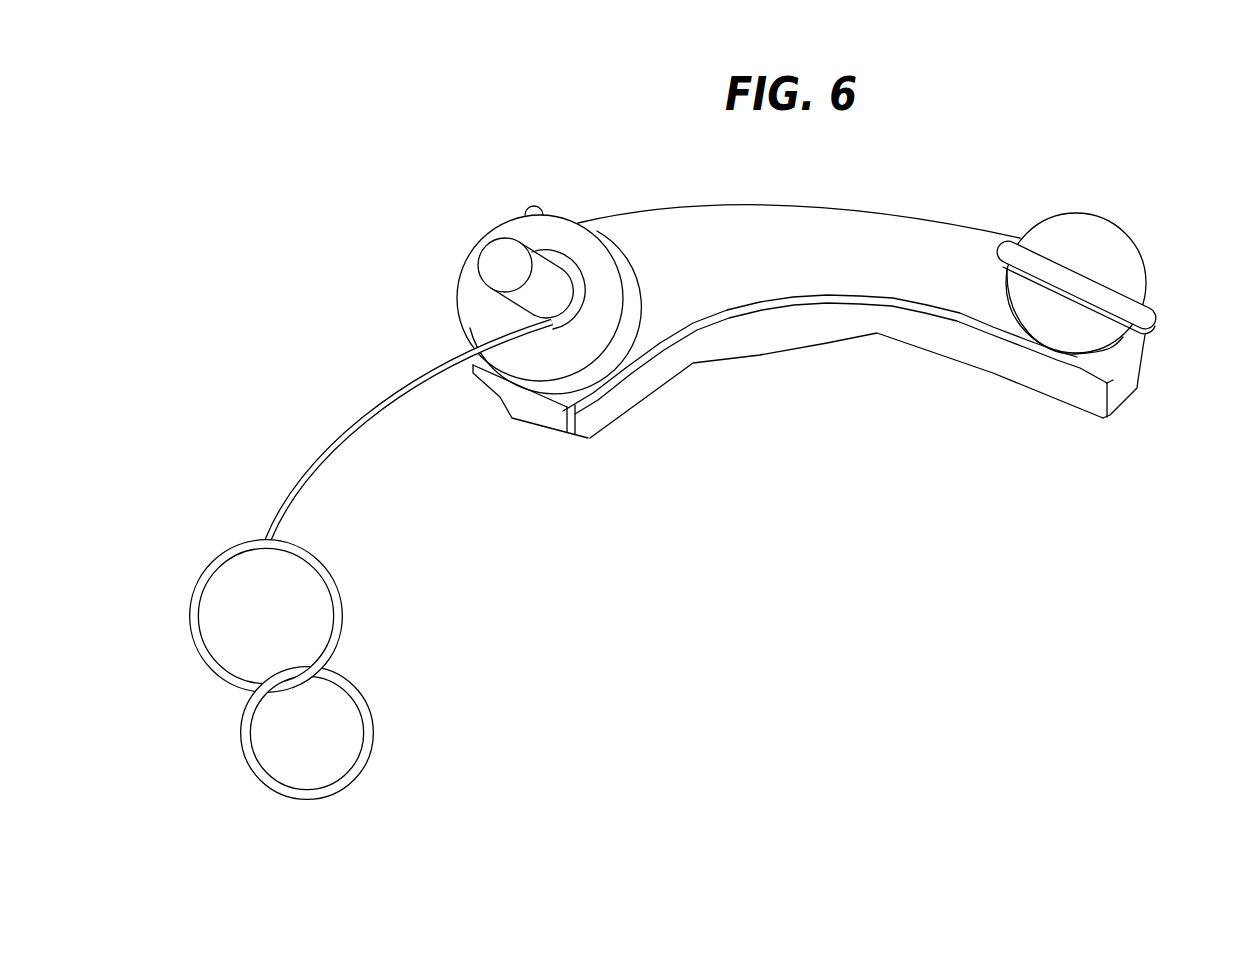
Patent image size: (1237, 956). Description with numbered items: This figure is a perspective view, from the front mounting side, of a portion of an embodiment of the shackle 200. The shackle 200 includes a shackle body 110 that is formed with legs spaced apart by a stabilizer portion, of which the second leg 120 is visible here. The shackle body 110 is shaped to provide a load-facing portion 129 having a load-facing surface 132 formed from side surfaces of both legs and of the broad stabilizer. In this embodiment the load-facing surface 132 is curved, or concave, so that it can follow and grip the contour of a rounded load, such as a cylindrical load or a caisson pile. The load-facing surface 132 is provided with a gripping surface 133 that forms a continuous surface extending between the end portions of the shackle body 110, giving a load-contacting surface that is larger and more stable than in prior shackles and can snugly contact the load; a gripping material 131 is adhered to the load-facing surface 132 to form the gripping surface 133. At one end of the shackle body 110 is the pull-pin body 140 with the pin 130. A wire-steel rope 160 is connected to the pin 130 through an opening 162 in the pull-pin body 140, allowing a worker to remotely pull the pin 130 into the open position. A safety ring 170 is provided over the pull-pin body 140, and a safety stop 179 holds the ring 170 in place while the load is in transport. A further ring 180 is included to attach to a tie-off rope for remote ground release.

The shackle 200 is at (468, 115).
The shackle body 110 is at (800, 212).
The second leg 120 is at (1097, 242).
The load-facing portion 129 is at (873, 300).
The pin 130 is at (493, 263).
The gripping material 131 is at (1093, 372).
The load-facing surface 132 is at (1088, 358).
The gripping surface 133 is at (923, 332).
The pull-pin body 140 is at (570, 238).
The wire-steel rope 160 is at (397, 390).
The opening 162 is at (550, 325).
The safety ring 170 is at (342, 614).
The safety stop 179 is at (525, 212).
The ring 180 is at (367, 712).